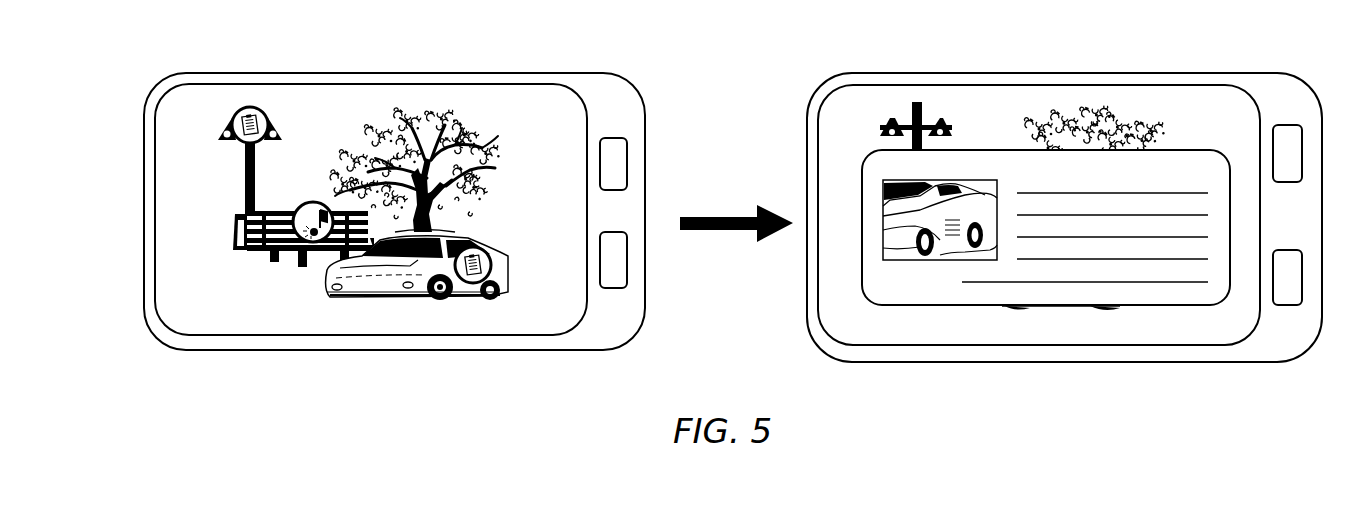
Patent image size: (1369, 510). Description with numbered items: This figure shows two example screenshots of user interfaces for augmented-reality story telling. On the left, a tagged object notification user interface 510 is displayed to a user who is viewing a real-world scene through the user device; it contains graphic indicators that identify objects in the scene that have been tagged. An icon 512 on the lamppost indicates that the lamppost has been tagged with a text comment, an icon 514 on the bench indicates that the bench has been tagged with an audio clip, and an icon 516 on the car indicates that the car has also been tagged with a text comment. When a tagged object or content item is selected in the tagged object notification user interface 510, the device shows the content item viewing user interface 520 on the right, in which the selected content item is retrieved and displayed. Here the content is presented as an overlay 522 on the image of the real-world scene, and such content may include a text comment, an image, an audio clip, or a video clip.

The tagged object notification user interface 510 is at (358, 394).
The icon 512 is at (222, 122).
The icon 514 is at (238, 230).
The icon 516 is at (480, 298).
The content item viewing user interface 520 is at (1068, 402).
The overlay 522 is at (1182, 150).